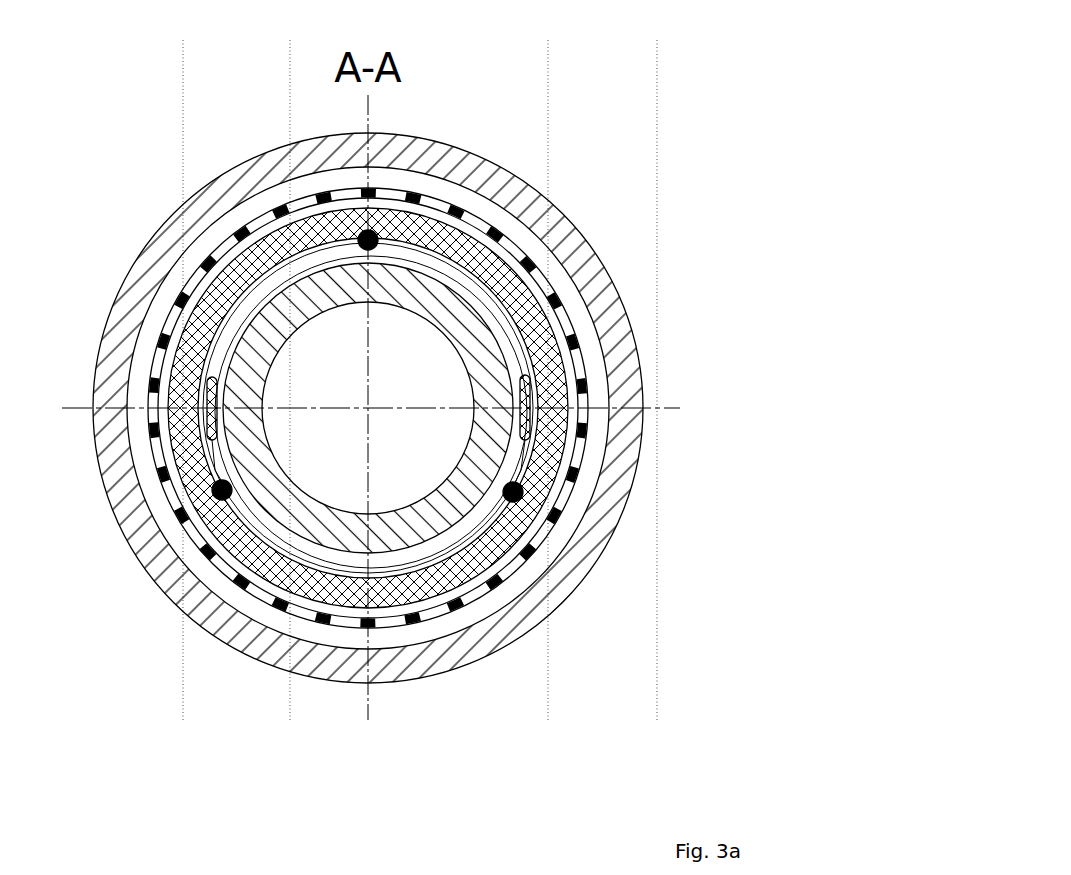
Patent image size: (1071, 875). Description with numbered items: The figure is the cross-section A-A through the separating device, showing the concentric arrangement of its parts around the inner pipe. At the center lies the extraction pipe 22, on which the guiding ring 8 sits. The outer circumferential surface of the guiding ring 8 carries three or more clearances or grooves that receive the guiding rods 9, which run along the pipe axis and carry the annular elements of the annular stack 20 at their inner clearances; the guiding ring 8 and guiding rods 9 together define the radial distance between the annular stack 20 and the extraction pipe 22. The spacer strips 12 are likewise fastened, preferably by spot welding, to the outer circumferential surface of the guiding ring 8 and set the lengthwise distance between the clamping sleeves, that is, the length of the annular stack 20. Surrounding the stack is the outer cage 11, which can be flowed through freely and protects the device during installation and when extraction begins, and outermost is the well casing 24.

The annular stack 20 is at (565, 250).
The well casing 24 is at (530, 262).
The spacer strips 12 is at (588, 364).
The outer cage 11 is at (567, 495).
The guiding ring 8 is at (578, 440).
The guiding rod 9 is at (530, 506).
The extraction pipe 22 is at (420, 287).